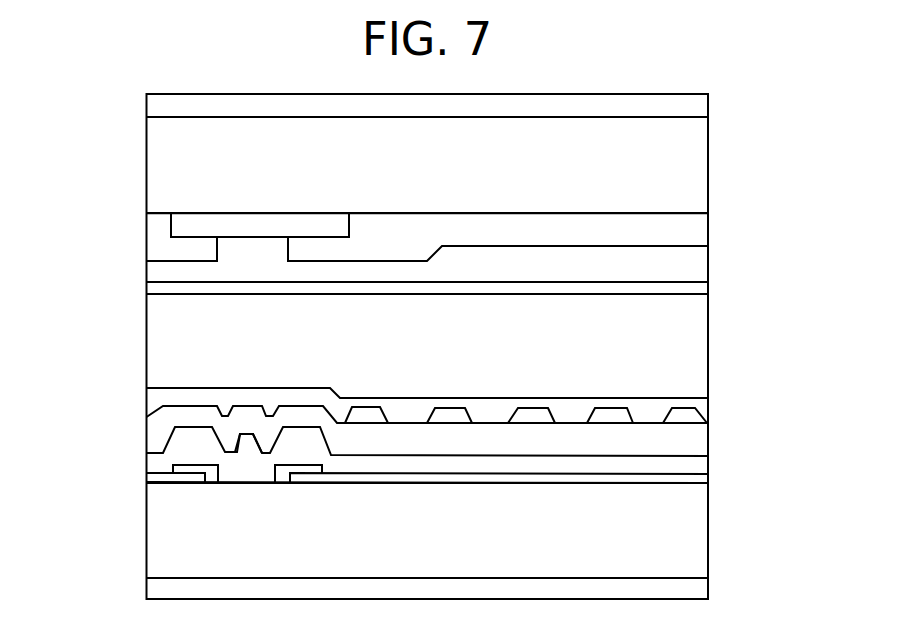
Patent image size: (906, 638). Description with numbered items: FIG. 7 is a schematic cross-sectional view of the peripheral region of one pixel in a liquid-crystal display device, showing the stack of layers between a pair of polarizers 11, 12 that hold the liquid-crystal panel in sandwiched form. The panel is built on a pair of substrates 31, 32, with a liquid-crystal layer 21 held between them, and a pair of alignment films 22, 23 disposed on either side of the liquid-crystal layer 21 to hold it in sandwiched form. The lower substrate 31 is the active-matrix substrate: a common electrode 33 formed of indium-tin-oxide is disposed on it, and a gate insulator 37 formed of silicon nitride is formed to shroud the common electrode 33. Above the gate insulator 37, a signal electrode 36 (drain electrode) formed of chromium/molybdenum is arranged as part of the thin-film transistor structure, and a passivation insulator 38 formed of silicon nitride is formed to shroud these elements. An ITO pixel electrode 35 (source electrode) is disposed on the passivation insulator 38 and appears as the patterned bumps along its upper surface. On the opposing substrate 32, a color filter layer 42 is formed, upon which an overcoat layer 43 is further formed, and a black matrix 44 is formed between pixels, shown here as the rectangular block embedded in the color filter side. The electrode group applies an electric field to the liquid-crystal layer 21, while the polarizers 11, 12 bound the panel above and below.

The polarizer 11 is at (688, 110).
The polarizer 12 is at (173, 588).
The liquid-crystal layer 21 is at (688, 344).
The alignment film 22 is at (167, 397).
The alignment film 23 is at (167, 292).
The substrate 31 is at (180, 516).
The substrate 32 is at (688, 163).
The common electrode 33 is at (692, 481).
The pixel electrode 35 is at (690, 418).
The signal electrode 36 is at (247, 447).
The gate insulator 37 is at (692, 467).
The passivation insulator 38 is at (690, 444).
The color filter layer 42 is at (688, 231).
The overcoat layer 43 is at (688, 267).
The black matrix 44 is at (210, 227).